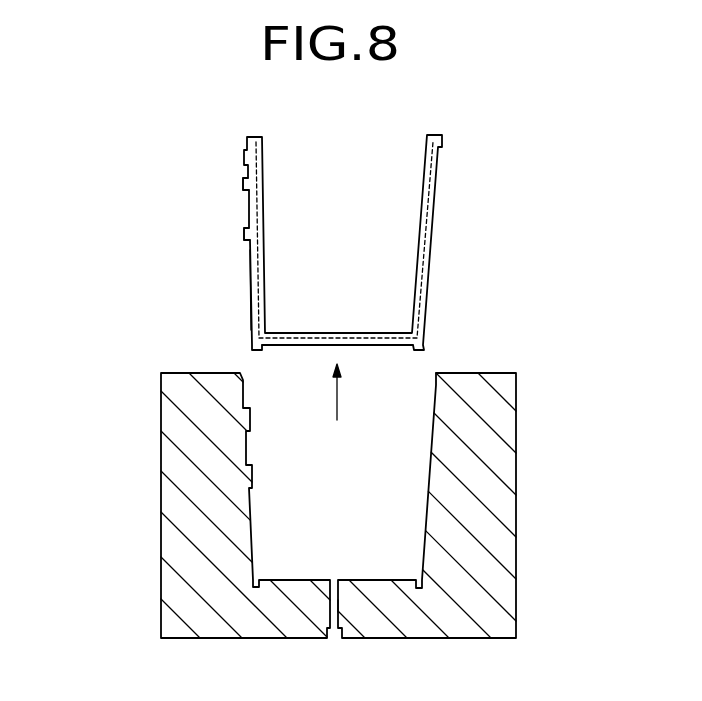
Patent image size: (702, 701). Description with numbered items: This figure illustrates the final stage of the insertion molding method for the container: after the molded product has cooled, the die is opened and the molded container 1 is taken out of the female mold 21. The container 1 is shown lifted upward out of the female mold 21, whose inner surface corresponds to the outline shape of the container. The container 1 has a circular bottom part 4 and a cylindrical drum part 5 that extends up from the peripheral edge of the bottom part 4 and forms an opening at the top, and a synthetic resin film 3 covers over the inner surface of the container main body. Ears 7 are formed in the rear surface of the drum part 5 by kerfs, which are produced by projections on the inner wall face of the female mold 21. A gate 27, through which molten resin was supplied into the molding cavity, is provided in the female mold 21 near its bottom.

The container 1 is at (446, 227).
The synthetic resin film 3 is at (262, 210).
The bottom part 4 is at (357, 345).
The drum part 5 is at (254, 278).
The ear 7 is at (250, 185).
The female mold 21 is at (176, 494).
The gate 27 is at (340, 603).